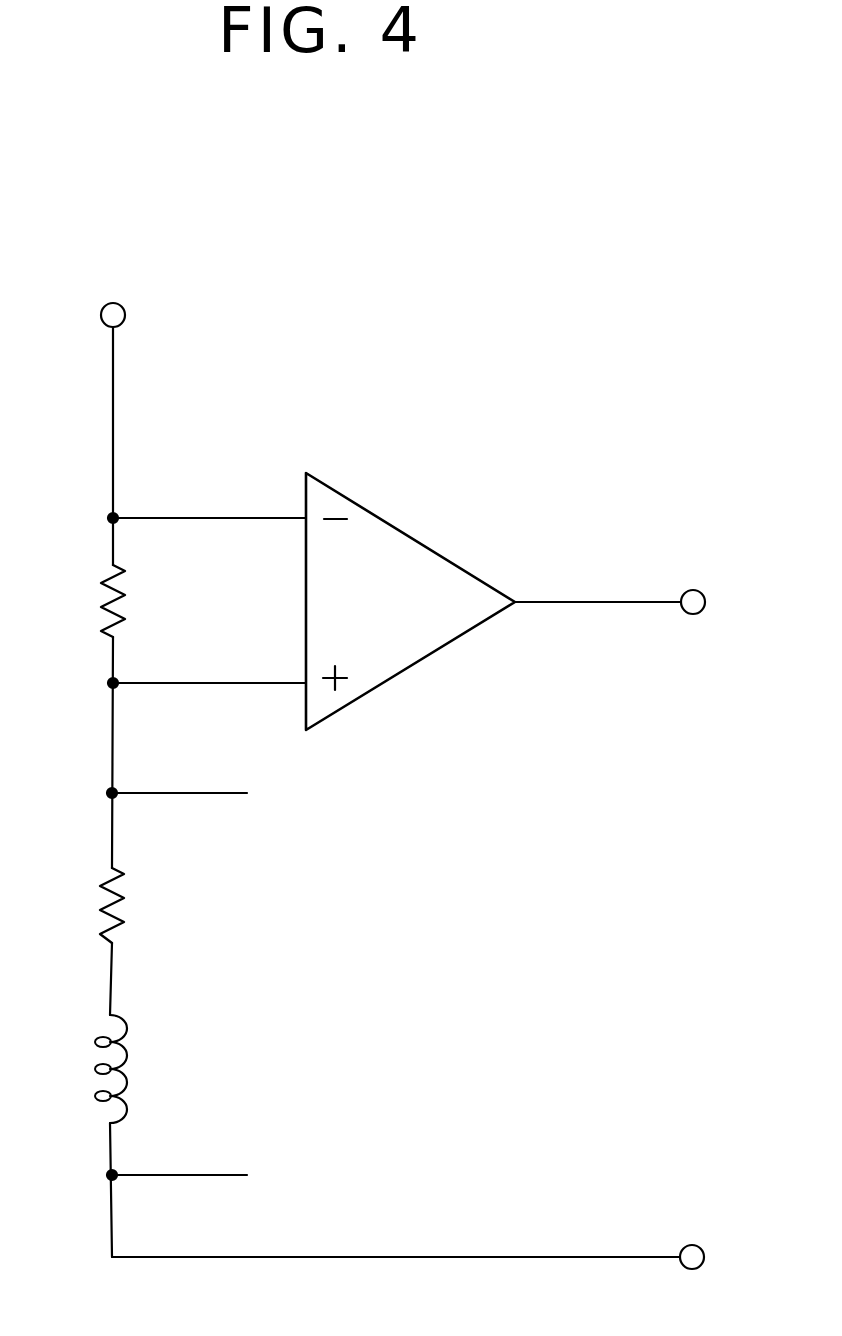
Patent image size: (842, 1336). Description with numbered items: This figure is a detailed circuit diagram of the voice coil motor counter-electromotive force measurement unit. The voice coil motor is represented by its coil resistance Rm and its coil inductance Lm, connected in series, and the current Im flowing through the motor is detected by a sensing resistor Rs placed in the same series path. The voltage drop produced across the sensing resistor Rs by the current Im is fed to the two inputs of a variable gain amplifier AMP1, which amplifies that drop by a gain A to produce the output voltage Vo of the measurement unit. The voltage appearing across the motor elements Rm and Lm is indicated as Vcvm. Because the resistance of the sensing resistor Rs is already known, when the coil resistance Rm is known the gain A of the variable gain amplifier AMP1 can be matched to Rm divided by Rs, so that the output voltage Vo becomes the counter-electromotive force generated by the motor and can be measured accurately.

The current Im is at (55, 220).
The sensing resistor Rs is at (79, 601).
The coil resistance Rm is at (77, 905).
The coil inductance Lm is at (79, 1069).
The variable gain amplifier AMP1 is at (410, 668).
The output voltage Vo is at (628, 623).
The voltage across motor Vcvm is at (229, 797).